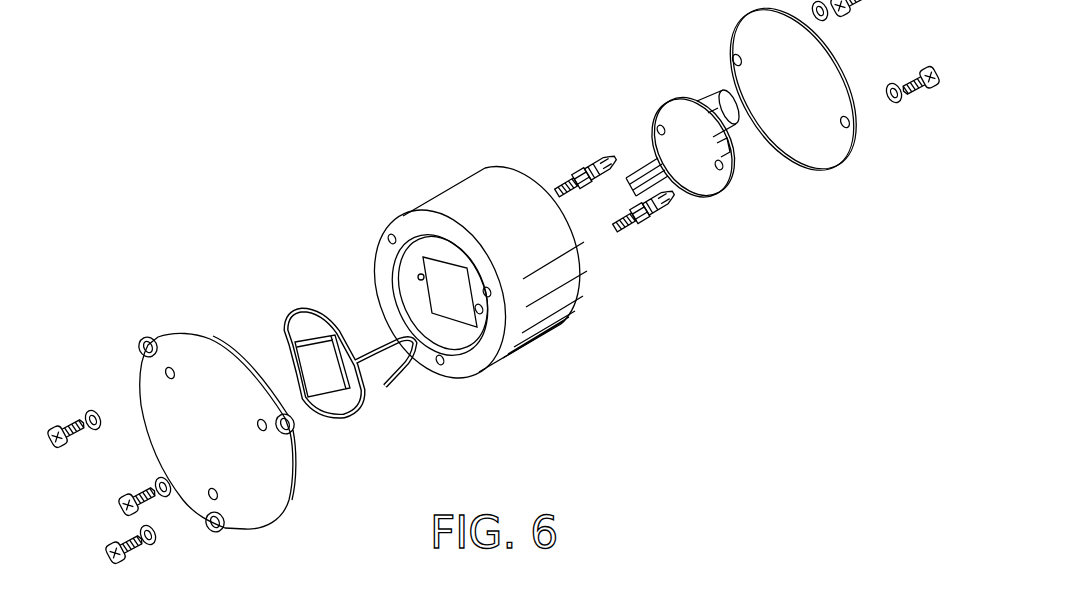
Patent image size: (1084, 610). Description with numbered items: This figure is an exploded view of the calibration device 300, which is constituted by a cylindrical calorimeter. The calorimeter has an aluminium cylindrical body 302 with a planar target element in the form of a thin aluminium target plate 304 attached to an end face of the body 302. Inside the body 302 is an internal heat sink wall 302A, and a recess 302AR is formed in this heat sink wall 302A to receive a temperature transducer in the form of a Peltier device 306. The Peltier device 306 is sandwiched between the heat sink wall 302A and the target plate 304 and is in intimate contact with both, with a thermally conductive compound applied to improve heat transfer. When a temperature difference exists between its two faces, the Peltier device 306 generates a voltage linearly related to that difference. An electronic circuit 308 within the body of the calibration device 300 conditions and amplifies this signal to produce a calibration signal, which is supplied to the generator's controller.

The calibration device 300 is at (552, 383).
The cylindrical body 302 is at (462, 193).
The internal heat sink wall 302A is at (462, 345).
The recess 302AR is at (420, 277).
The target plate 304 is at (180, 337).
The Peltier device 306 is at (314, 345).
The electronic circuit 308 is at (668, 108).